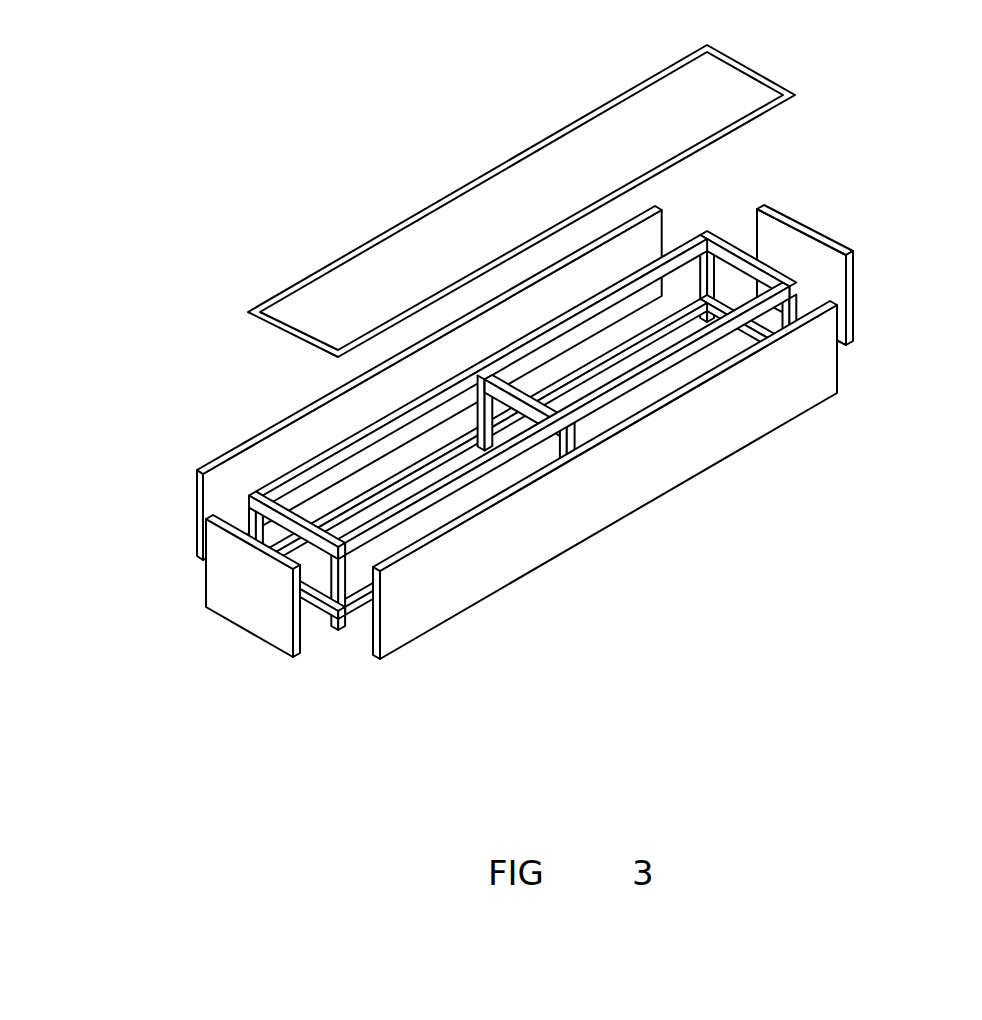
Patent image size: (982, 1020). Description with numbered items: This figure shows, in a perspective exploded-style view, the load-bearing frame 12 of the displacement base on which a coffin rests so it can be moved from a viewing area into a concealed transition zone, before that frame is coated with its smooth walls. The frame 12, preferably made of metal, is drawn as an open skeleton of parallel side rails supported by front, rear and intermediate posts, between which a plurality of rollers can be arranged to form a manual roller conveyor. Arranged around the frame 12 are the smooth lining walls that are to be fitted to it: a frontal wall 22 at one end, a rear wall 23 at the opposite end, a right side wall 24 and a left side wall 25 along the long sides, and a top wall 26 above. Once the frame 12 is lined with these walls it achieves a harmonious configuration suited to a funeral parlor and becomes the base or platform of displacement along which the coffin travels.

The frame 12 is at (727, 209).
The frontal wall 22 is at (249, 618).
The rear wall 23 is at (825, 265).
The right side wall 24 is at (655, 475).
The left side wall 25 is at (224, 471).
The top wall 26 is at (360, 266).